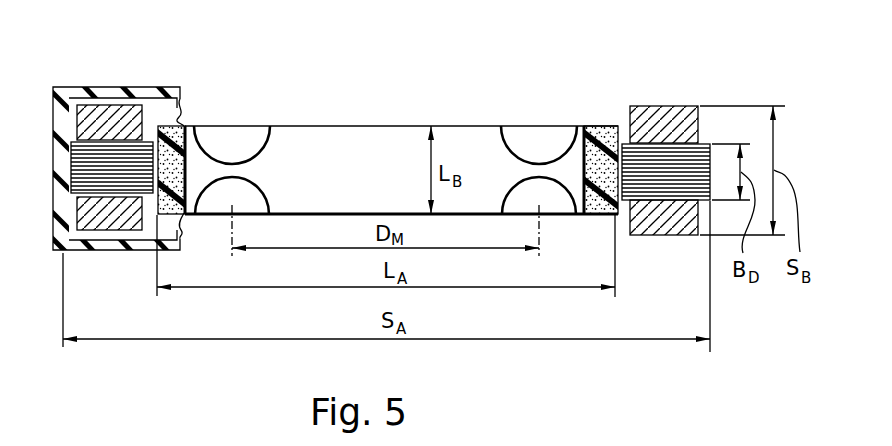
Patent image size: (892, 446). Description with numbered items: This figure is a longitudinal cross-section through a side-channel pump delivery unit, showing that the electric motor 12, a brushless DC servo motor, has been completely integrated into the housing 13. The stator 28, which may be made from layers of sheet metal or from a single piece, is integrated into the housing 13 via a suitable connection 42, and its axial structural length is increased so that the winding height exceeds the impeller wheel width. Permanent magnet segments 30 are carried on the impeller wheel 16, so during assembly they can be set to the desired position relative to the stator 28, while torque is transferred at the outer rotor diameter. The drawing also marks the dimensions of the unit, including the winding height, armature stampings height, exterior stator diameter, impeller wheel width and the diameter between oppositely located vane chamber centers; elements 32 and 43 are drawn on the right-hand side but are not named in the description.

The electric motor 12 is at (116, 139).
The housing 13 is at (138, 87).
The impeller wheel 16 is at (338, 135).
The stator 28 is at (100, 138).
The permanent magnet segments 30 is at (191, 150).
The magnet 32 is at (672, 115).
The connection 42 is at (64, 161).
The coil 43 is at (666, 180).